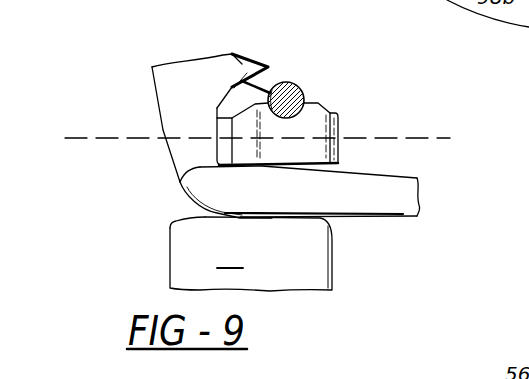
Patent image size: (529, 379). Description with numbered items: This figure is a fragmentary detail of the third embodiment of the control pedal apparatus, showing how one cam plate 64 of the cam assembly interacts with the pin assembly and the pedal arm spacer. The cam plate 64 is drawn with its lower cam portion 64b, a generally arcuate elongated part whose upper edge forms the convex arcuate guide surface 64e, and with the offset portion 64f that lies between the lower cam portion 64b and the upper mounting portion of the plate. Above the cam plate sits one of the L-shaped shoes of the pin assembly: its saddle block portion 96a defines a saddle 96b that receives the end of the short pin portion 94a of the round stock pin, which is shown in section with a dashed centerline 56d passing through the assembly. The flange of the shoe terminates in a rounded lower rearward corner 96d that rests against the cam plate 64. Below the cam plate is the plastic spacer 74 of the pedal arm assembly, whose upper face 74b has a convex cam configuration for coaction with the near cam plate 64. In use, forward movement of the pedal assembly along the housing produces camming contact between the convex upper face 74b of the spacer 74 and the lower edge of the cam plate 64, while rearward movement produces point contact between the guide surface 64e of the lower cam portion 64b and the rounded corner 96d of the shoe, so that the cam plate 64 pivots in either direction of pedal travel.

The cam plate 64 is at (290, 166).
The lower cam portion 64b is at (382, 166).
The convex arcuate guide surface 64e is at (460, 182).
The offset portion 64f is at (372, 216).
The centerline / axis 56d is at (108, 140).
The saddle block portion 96a is at (336, 112).
The saddle 96b is at (243, 80).
The rounded lower rearward corner 96d is at (183, 181).
The short pin portion 94a is at (284, 82).
The plastic spacer 74 is at (199, 251).
The upper face 74b is at (172, 221).